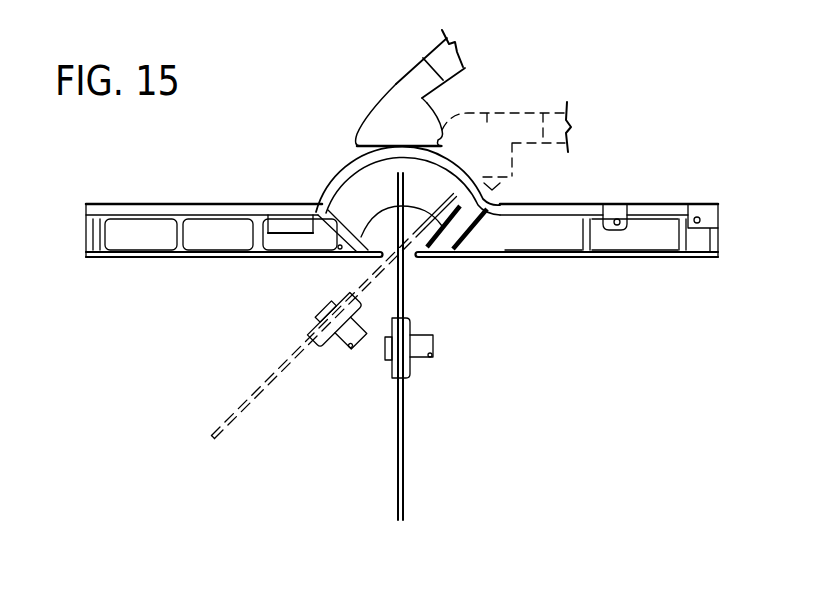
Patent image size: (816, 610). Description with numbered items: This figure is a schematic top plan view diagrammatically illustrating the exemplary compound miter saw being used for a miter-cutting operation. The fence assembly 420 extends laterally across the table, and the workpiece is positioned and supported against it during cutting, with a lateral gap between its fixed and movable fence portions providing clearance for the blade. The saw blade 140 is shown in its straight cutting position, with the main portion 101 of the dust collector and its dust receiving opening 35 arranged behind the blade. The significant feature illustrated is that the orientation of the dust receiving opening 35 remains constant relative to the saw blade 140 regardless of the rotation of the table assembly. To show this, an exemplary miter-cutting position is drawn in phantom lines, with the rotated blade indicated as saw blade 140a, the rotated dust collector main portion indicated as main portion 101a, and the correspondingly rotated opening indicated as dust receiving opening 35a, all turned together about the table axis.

The fence assembly 420 is at (208, 272).
The dust receiving opening 35 is at (382, 151).
The main portion 101 is at (398, 78).
The main portion in miter-cutting position 101a is at (447, 124).
The dust-receiving opening in miter-cutting position 35a is at (514, 177).
The saw blade 140 is at (404, 428).
The saw blade in miter-cutting position 140a is at (263, 391).